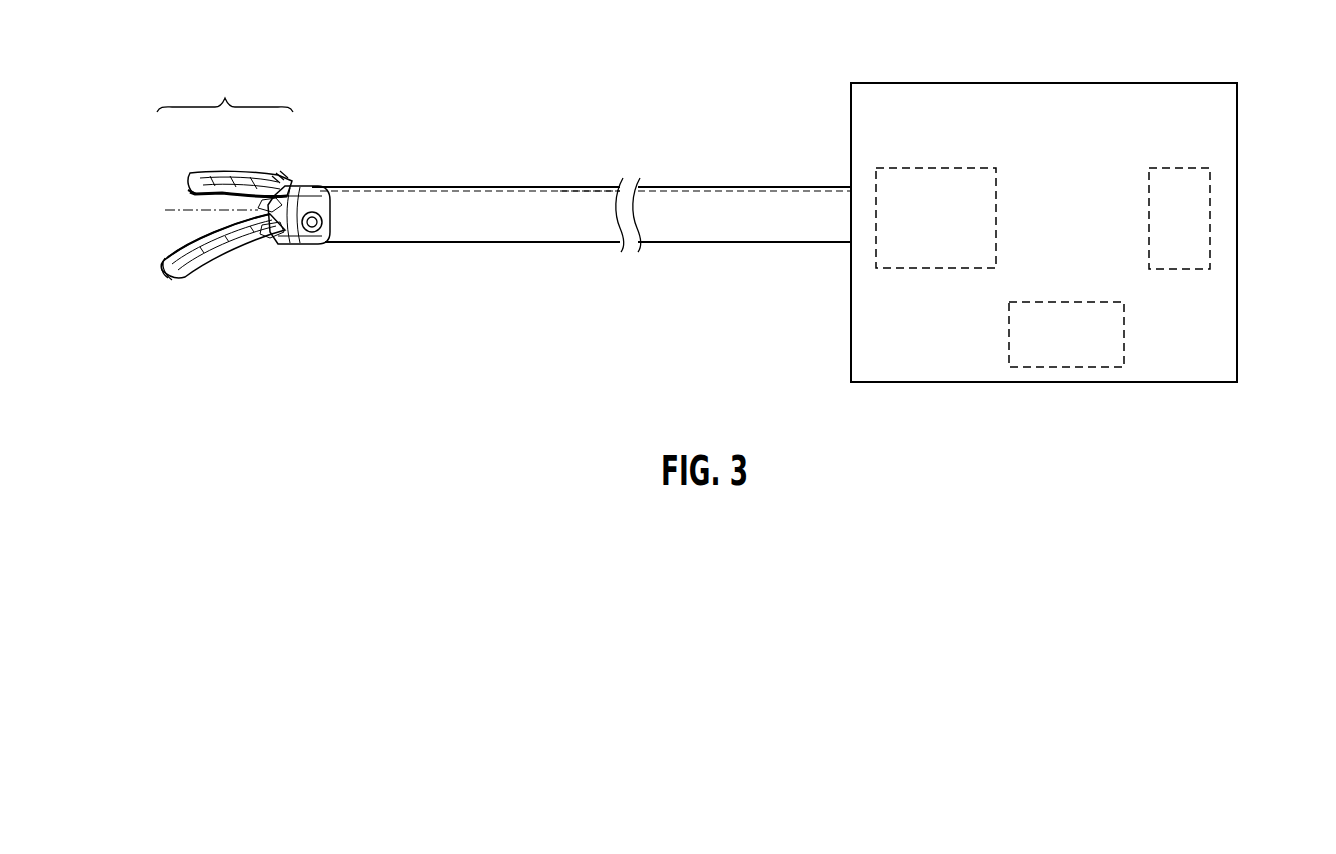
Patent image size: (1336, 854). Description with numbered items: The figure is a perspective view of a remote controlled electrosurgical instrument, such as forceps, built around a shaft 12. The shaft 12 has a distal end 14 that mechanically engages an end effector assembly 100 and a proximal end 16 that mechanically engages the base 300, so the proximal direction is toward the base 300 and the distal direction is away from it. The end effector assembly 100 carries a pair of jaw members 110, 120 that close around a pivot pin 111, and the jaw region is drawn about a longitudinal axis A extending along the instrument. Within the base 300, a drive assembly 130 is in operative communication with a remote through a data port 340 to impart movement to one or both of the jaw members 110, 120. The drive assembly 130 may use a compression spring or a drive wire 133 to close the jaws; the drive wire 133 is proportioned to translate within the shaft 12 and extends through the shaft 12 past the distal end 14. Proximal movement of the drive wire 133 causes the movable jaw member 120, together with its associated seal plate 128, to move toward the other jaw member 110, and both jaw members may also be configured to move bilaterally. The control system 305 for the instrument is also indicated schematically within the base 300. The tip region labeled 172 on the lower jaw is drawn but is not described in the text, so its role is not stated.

The end effector assembly 100 is at (225, 90).
The shaft 12 is at (552, 225).
The distal end 14 is at (337, 187).
The proximal end 16 is at (837, 187).
The jaw member 110 is at (217, 267).
The jaw member 120 is at (222, 176).
The pivot pin 111 is at (322, 238).
The seal plate 128 is at (190, 193).
The drive wire 133 is at (278, 177).
The jaw tip / tissue-contacting surface 172 is at (166, 259).
The longitudinal axis A is at (194, 209).
The base 300 is at (1043, 83).
The drive assembly 130 is at (872, 252).
The data port 340 is at (1212, 218).
The control system 305 is at (1068, 370).